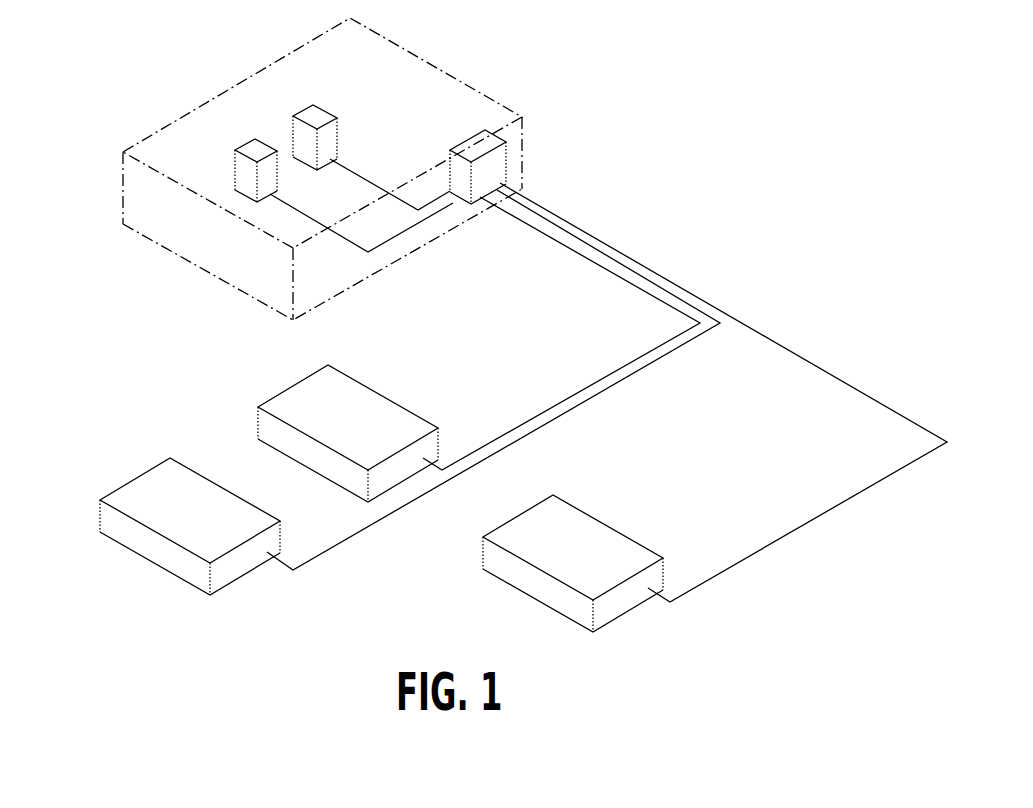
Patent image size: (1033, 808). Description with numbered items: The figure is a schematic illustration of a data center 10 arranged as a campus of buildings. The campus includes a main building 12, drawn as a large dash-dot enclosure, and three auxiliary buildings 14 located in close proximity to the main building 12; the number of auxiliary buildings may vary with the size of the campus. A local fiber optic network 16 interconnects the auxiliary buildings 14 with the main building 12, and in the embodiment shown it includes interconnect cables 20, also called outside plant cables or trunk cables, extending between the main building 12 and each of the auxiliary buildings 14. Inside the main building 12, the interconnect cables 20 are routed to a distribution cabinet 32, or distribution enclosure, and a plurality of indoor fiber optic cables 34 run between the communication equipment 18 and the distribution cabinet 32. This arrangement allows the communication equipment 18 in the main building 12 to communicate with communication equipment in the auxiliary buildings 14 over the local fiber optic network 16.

The data center 10 is at (70, 112).
The main building 12 is at (437, 63).
The auxiliary buildings 14 is at (295, 383).
The local fiber optic network 16 is at (607, 392).
The communication equipment 18 is at (250, 143).
The interconnect cables 20 is at (788, 348).
The distribution cabinet 32 is at (468, 142).
The indoor fiber optic cables 34 is at (355, 172).